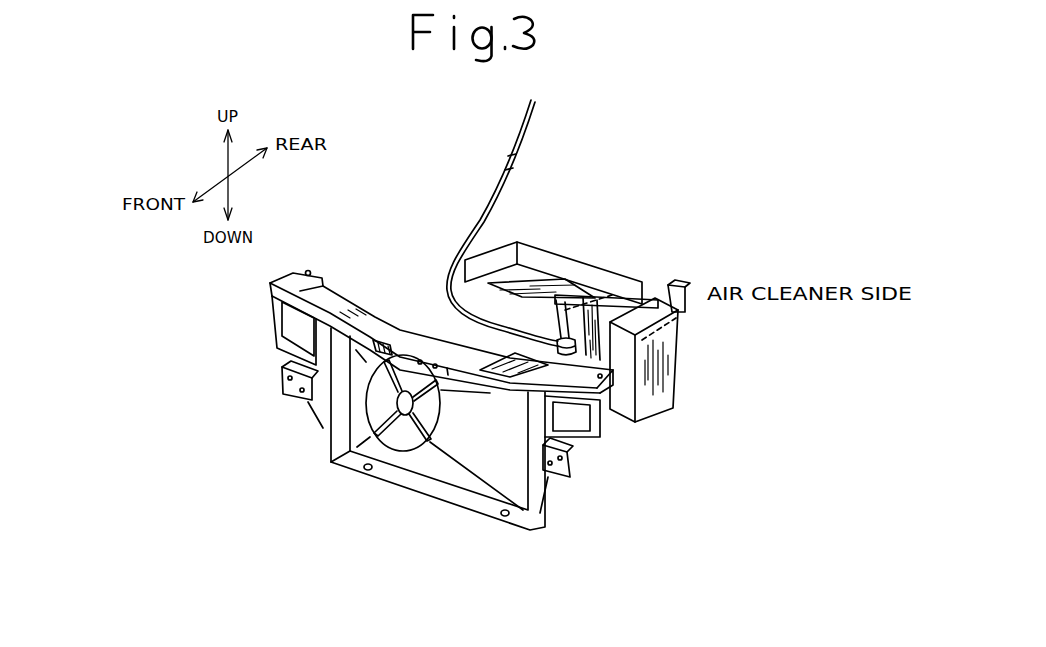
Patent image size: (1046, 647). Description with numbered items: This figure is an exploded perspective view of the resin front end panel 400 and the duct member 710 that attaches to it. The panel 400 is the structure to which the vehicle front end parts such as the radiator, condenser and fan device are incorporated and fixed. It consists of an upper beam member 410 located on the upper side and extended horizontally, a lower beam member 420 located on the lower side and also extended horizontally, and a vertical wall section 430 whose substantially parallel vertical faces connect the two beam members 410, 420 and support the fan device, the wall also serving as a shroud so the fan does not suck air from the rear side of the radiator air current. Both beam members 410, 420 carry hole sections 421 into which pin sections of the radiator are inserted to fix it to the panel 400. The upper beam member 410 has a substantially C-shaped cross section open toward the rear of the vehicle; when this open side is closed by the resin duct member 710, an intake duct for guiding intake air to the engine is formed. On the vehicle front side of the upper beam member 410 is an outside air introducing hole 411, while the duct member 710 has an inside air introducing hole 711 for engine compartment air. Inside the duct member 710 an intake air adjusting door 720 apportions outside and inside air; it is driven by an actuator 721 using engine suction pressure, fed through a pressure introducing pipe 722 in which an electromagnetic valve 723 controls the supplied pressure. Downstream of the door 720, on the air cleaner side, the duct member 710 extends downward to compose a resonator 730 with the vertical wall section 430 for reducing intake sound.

The front end panel 400 is at (300, 258).
The upper beam member 410 is at (558, 388).
The outside air introducing hole 411 is at (390, 345).
The lower beam member 420 is at (478, 502).
The hole sections 421 is at (368, 472).
The vertical wall section 430 is at (498, 468).
The duct member 710 is at (568, 257).
The inside air introducing hole 711 is at (610, 290).
The intake air adjusting door 720 is at (575, 282).
The actuator 721 is at (600, 350).
The pressure introducing pipe 722 is at (500, 188).
The electromagnetic valve 723 is at (510, 150).
The resonator 730 is at (625, 355).